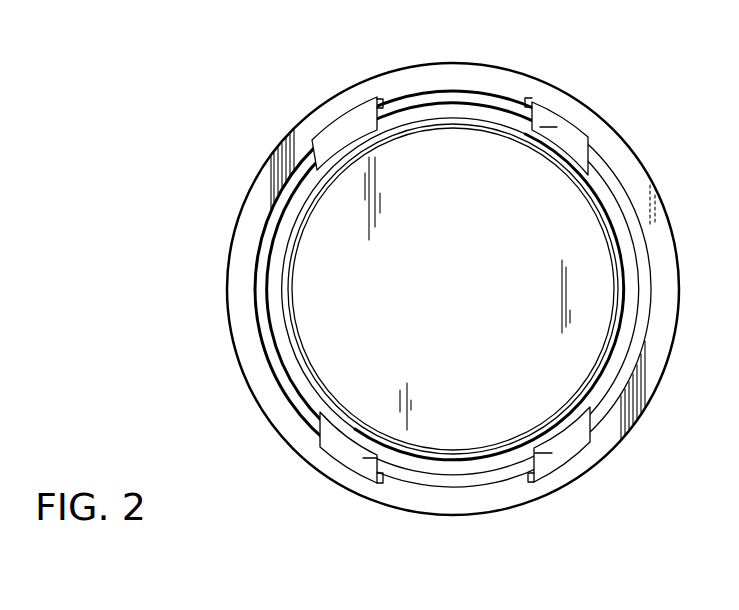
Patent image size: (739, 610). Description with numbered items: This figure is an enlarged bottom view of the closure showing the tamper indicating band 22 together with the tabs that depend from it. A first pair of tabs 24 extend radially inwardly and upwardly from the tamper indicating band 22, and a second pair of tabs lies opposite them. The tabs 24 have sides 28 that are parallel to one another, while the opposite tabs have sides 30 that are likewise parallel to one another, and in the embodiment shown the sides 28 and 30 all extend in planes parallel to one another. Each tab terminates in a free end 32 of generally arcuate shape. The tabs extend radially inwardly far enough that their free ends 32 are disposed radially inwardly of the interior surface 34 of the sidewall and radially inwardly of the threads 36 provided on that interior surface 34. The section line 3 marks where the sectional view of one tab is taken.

The tamper indicating band 22 is at (250, 225).
The tabs 24 is at (433, 462).
The sides 28 is at (313, 430).
The sides 30 is at (313, 157).
The free end 32 is at (335, 153).
The interior surface 34 is at (257, 277).
The threads 36 is at (278, 340).
The section line 3- 3 is at (388, 422).